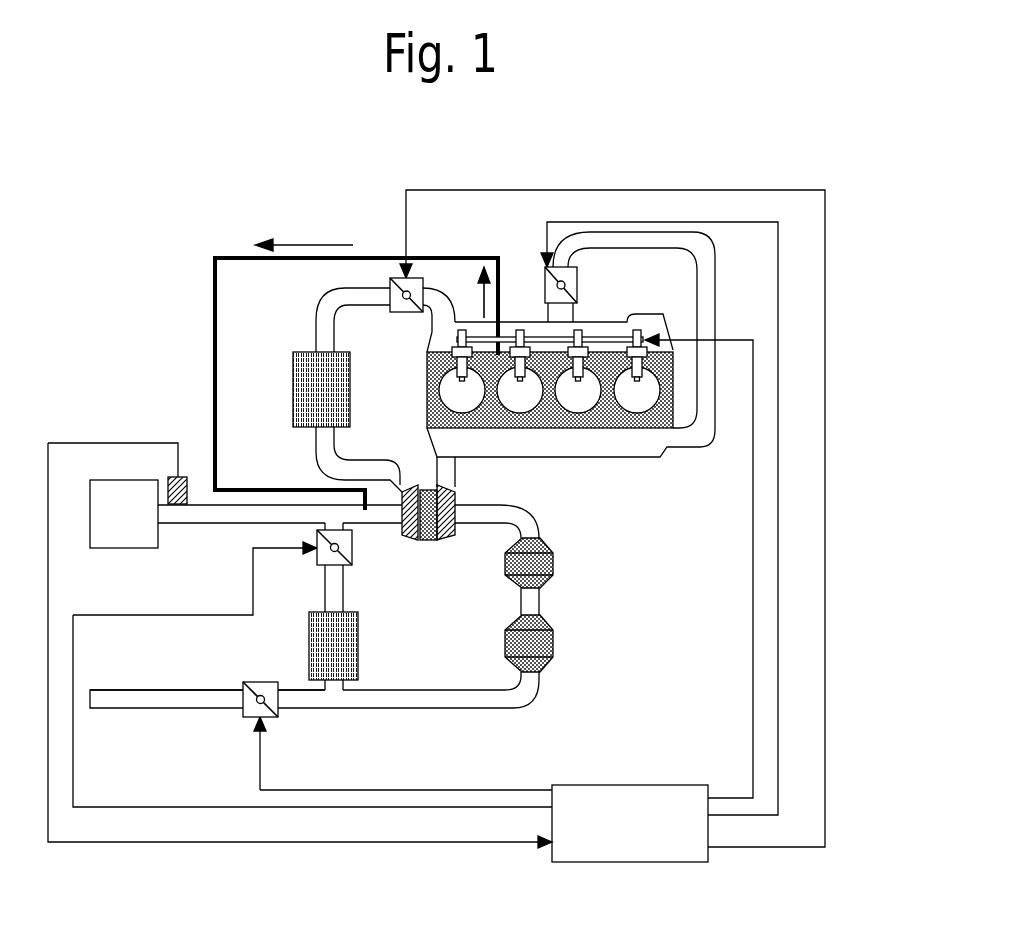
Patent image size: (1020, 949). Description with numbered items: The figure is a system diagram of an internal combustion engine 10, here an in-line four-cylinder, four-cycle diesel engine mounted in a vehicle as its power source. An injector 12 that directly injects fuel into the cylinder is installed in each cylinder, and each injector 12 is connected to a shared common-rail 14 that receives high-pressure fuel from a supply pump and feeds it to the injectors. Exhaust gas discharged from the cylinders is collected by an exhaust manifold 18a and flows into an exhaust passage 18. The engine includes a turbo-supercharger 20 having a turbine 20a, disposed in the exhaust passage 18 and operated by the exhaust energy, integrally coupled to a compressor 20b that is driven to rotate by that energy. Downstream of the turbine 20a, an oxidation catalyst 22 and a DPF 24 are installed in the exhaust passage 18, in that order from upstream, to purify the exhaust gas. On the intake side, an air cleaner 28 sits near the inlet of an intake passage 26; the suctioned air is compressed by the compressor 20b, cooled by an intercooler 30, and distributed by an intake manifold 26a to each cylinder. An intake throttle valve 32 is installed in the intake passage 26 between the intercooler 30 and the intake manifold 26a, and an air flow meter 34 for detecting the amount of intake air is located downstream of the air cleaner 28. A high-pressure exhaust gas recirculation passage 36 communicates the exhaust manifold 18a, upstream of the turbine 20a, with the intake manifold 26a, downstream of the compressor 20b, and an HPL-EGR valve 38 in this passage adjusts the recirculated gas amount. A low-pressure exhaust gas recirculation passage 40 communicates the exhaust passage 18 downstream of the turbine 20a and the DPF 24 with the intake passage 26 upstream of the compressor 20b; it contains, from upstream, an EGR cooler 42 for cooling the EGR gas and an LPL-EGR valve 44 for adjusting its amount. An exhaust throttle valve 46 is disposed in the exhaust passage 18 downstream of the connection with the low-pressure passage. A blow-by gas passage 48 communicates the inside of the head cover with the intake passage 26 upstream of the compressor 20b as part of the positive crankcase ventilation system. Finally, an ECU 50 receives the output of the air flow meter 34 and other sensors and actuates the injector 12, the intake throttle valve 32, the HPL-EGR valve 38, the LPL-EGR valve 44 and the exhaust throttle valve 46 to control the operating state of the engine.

The internal combustion engine 10 is at (547, 430).
The injector 12 is at (439, 385).
The common-rail 14 is at (600, 337).
The exhaust passage 18 is at (456, 478).
The exhaust manifold 18a is at (620, 458).
The turbo-supercharger 20 is at (441, 557).
The turbine 20a is at (455, 540).
The compressor 20b is at (404, 540).
The oxidation catalyst 22 is at (553, 566).
The DPF 24 is at (553, 642).
The intake passage 26 is at (355, 456).
The intake manifold 26a is at (646, 325).
The air cleaner 28 is at (108, 548).
The intercooler 30 is at (293, 400).
The intake throttle valve 32 is at (404, 312).
The air flow meter 34 is at (172, 478).
The high-pressure exhaust gas recirculation passage 36 is at (715, 288).
The HPL-EGR valve 38 is at (577, 272).
The low-pressure exhaust gas recirculation passage 40 is at (326, 589).
The EGR cooler 42 is at (358, 650).
The LPL-EGR valve 44 is at (352, 548).
The exhaust throttle valve 46 is at (250, 682).
The blow-by gas passage 48 is at (228, 258).
The ECU 50 is at (665, 785).